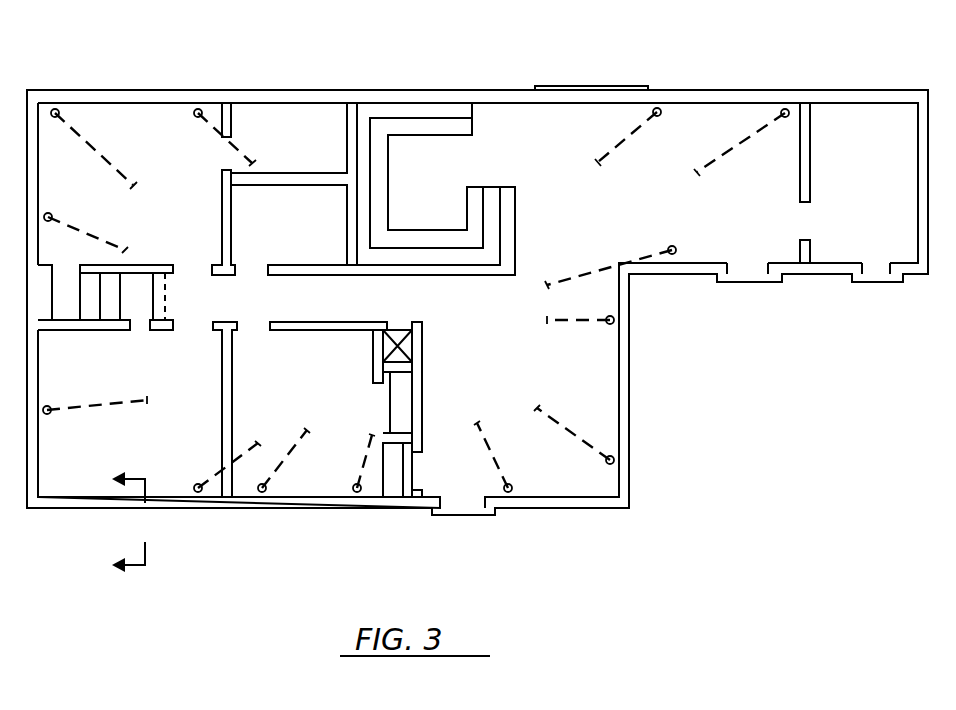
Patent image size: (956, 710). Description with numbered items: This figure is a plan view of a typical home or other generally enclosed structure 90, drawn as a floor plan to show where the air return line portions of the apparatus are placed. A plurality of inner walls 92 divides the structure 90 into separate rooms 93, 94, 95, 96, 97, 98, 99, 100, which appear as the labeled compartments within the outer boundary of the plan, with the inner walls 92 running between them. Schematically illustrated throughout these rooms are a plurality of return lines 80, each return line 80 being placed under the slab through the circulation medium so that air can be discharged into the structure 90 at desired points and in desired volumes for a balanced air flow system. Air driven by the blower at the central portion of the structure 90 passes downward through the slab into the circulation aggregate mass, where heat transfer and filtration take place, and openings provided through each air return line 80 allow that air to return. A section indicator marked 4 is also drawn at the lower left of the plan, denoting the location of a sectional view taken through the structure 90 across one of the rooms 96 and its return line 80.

The section line 4- 4 is at (178, 493).
The return line 80 is at (85, 137).
The generally enclosed structure 90 is at (355, 84).
The inner walls 92 is at (221, 202).
The room 93 is at (174, 144).
The room 94 is at (296, 152).
The room 95 is at (304, 234).
The room 96 is at (179, 371).
The room 97 is at (329, 382).
The room 98 is at (546, 382).
The room 99 is at (636, 209).
The room 100 is at (882, 209).